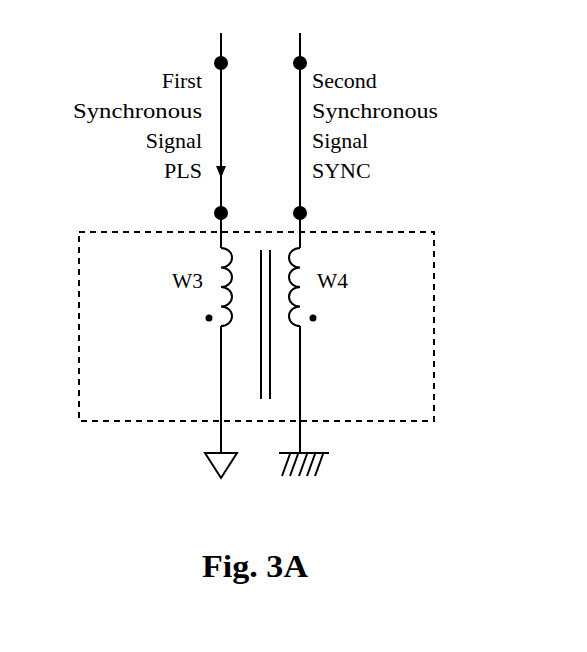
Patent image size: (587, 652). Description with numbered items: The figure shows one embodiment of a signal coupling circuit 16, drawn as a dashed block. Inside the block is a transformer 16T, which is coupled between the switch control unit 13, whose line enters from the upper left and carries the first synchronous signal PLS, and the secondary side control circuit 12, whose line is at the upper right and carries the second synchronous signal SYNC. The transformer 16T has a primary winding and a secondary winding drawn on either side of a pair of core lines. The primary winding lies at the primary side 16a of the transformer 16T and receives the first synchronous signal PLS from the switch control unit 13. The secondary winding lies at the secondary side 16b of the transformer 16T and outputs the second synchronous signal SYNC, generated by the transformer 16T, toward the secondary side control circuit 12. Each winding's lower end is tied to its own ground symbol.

The secondary side control circuit 12 is at (301, 111).
The switch control unit 13 is at (222, 111).
The signal coupling circuit 16 is at (79, 292).
The primary side 16a is at (117, 255).
The secondary side 16b is at (407, 270).
The transformer 16T is at (428, 412).